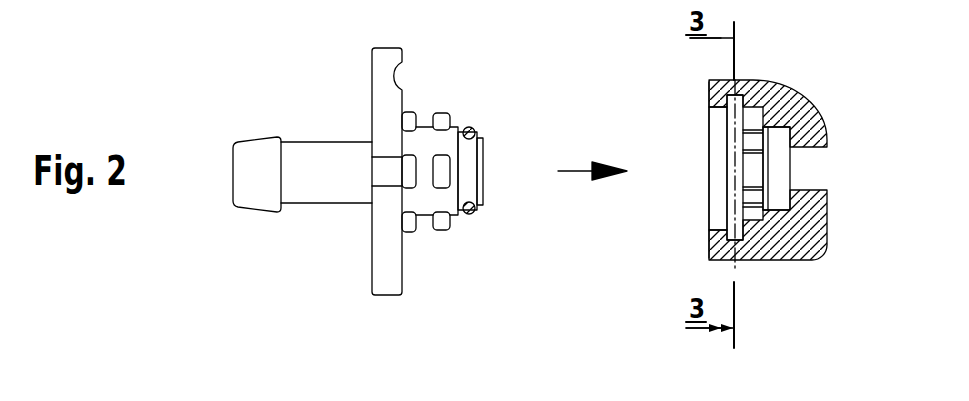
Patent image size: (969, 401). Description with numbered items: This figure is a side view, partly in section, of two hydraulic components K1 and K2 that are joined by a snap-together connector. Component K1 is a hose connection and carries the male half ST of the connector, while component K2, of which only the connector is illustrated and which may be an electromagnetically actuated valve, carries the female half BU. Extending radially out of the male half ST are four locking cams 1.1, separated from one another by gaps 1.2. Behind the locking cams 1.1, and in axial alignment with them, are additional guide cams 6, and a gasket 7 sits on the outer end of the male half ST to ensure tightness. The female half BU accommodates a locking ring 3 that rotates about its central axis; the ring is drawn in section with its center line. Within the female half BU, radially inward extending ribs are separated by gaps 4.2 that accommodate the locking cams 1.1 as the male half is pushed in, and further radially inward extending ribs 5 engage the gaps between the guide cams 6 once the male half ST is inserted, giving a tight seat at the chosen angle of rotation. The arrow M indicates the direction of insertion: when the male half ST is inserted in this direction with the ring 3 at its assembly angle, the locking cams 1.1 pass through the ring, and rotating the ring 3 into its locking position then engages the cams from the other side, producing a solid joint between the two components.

The component K1 is at (387, 280).
The component K2 is at (798, 260).
The male half ST is at (427, 115).
The female half BU is at (700, 120).
The locking cams 1.1 is at (452, 117).
The gaps 1.2 is at (440, 147).
The locking ring 3 is at (735, 160).
The gaps 4.2 is at (752, 117).
The ribs 5 is at (718, 213).
The guide cams 6 is at (410, 218).
The gasket 7 is at (475, 212).
The direction of insertion M is at (578, 171).